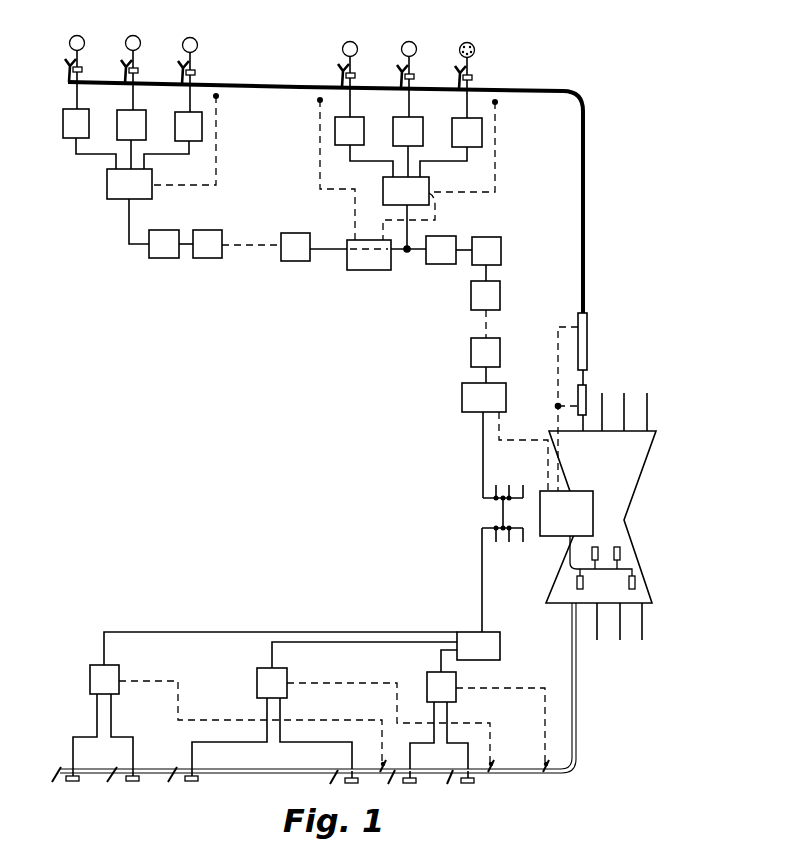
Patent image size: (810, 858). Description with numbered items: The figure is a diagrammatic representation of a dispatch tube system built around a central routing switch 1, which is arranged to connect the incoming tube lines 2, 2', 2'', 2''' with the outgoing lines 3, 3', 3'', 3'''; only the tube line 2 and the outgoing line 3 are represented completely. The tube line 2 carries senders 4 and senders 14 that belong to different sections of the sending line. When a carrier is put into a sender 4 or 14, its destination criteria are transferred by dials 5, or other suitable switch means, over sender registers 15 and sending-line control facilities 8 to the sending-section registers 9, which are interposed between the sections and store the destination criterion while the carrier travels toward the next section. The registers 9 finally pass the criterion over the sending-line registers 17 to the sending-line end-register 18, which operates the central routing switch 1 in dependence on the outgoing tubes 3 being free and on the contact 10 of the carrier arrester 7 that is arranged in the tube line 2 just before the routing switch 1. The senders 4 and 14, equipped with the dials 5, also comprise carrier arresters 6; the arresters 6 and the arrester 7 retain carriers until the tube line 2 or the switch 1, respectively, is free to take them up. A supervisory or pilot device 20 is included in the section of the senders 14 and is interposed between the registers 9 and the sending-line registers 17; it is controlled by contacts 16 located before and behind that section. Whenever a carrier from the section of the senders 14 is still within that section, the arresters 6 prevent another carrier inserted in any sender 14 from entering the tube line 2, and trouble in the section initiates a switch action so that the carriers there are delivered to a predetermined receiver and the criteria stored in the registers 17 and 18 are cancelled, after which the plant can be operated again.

The central routing switch 1 is at (598, 517).
The incoming tube line 2 is at (325, 256).
The incoming tube line 2' is at (603, 404).
The incoming tube line 2'' is at (626, 404).
The incoming tube line 2''' is at (652, 404).
The outgoing line 3 is at (326, 688).
The outgoing line 3' is at (597, 632).
The outgoing line 3'' is at (621, 632).
The outgoing line 3''' is at (646, 632).
The sender 4 is at (261, 66).
The dial 5 is at (272, 52).
The carrier arrester 6 is at (81, 68).
The carrier arrester 7 is at (577, 392).
The sending-line control facility 8 is at (271, 171).
The sending-section register 9 is at (238, 230).
The contact 10 is at (584, 403).
The sender 14 is at (333, 73).
The sender register 15 is at (272, 114).
The contact 16 is at (216, 96).
The sending-line register 17 is at (463, 309).
The sending-line end-register 18 is at (505, 440).
The pilot device 20 is at (391, 231).